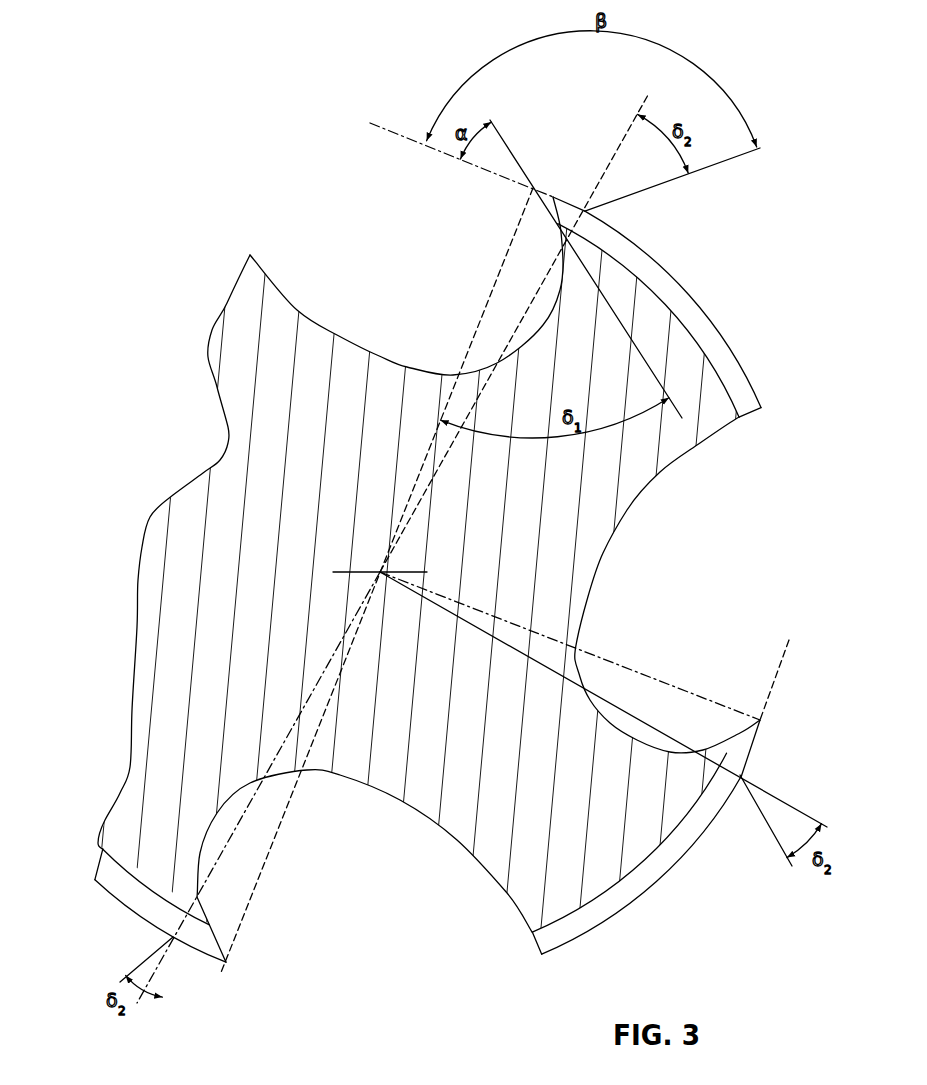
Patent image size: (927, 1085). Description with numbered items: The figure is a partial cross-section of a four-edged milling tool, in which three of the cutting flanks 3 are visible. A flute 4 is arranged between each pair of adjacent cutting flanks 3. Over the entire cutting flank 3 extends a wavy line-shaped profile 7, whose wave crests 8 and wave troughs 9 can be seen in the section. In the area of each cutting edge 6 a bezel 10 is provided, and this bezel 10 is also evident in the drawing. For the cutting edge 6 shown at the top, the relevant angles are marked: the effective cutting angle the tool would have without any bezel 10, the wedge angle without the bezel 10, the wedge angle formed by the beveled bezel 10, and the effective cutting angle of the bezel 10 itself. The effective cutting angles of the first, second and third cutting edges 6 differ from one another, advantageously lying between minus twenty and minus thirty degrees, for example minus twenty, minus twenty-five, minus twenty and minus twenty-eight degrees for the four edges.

The cutting flank 3 is at (763, 358).
The flute 4 is at (352, 338).
The cutting edge 6 is at (588, 212).
The wavy line-shaped profile 7 is at (731, 337).
The wave crest 8 is at (698, 303).
The wave trough 9 is at (664, 289).
The bezel 10 is at (553, 197).